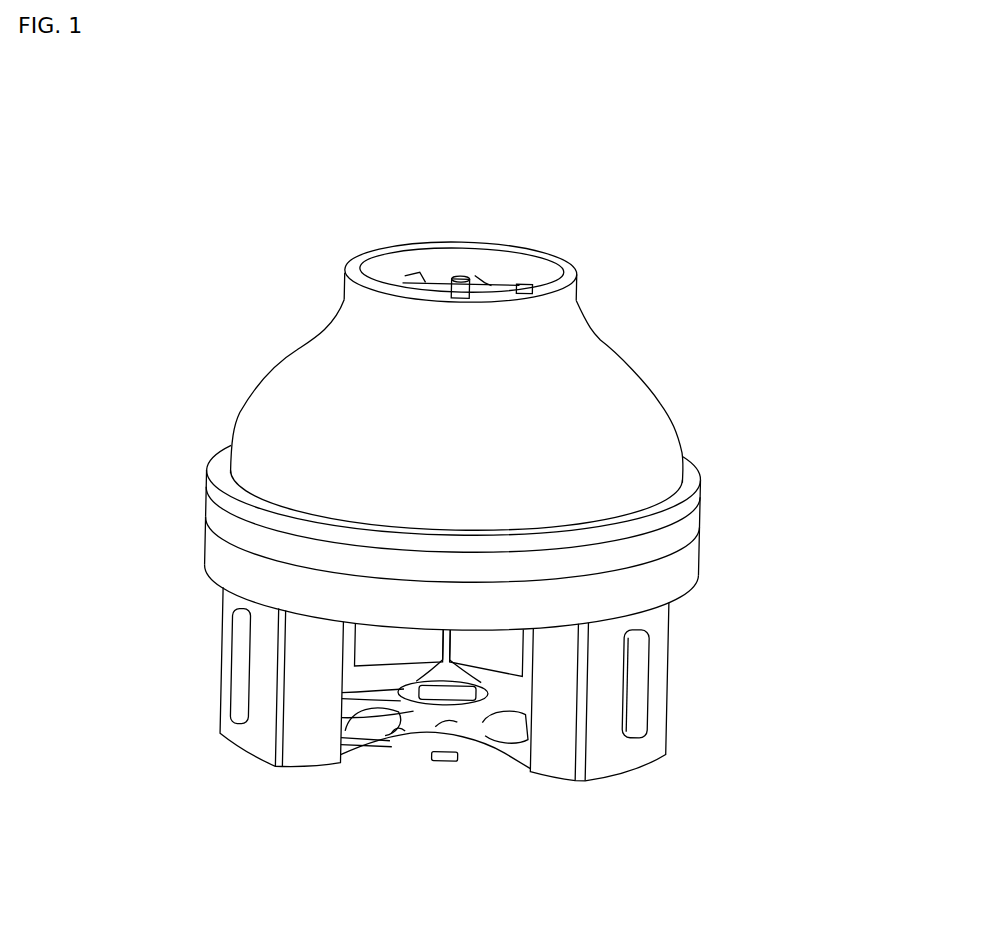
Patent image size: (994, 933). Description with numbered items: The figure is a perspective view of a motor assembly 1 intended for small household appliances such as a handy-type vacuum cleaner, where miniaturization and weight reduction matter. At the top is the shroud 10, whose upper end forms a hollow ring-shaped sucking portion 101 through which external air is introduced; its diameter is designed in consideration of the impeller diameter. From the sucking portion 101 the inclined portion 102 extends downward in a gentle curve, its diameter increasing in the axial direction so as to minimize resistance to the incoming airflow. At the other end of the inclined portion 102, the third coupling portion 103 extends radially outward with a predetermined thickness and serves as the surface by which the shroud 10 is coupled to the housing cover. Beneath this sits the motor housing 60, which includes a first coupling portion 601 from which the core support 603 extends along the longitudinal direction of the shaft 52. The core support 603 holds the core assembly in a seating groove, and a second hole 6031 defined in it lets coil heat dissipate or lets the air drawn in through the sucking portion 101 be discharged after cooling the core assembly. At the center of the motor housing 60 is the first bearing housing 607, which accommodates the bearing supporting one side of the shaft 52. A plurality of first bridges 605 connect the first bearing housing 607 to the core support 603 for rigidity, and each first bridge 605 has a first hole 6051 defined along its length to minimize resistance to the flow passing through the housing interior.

The motor assembly 1 is at (185, 242).
The shroud 10 is at (863, 205).
The sucking portion 101 is at (500, 278).
The inclined portion 102 is at (632, 367).
The third coupling portion 103 is at (700, 472).
The shaft 52 is at (458, 277).
The motor housing 60 is at (863, 602).
The first coupling portion 601 is at (697, 571).
The core support 603 is at (668, 673).
The second hole 6031 is at (637, 690).
The first bridge 605 is at (513, 743).
The first bearing housing 607 is at (447, 720).
The first hole 6051 is at (400, 732).